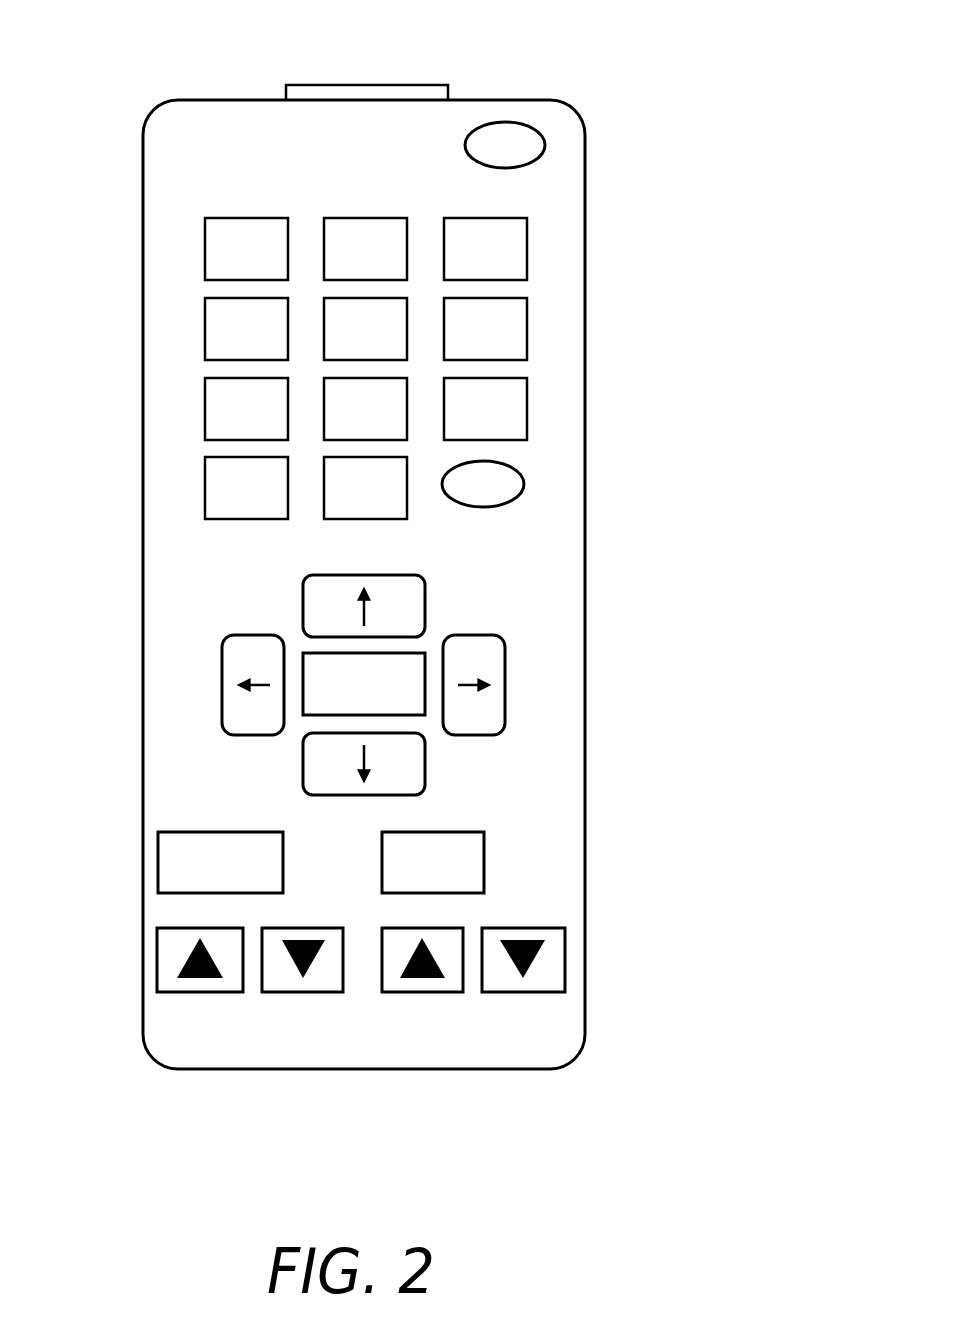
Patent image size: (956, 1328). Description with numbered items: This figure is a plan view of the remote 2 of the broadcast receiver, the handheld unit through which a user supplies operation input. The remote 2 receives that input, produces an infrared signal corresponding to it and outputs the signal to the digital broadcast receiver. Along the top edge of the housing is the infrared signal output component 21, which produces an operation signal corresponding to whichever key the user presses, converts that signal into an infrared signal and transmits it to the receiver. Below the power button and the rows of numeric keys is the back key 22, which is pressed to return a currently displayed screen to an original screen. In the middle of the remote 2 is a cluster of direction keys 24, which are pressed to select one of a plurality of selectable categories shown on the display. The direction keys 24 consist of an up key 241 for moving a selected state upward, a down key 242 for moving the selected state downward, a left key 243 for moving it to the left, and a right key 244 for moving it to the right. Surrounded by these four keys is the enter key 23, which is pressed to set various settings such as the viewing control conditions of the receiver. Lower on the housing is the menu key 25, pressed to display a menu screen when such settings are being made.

The remote 2 is at (540, 78).
The infrared signal output component 21 is at (364, 85).
The back key 22 is at (524, 484).
The enter key 23 is at (306, 652).
The direction keys 24 is at (552, 664).
The up key 241 is at (425, 607).
The down key 242 is at (425, 768).
The left key 243 is at (222, 674).
The right key 244 is at (505, 702).
The menu key 25 is at (484, 860).